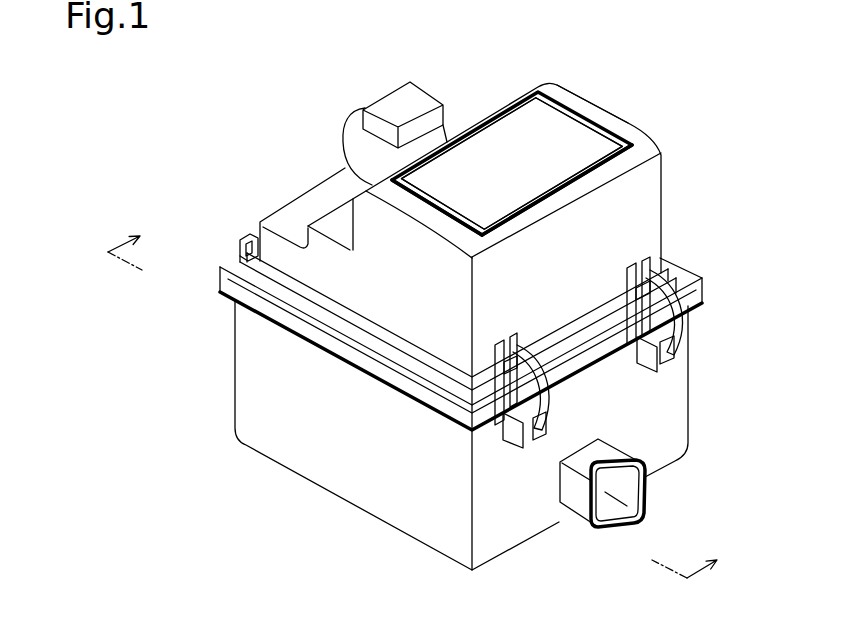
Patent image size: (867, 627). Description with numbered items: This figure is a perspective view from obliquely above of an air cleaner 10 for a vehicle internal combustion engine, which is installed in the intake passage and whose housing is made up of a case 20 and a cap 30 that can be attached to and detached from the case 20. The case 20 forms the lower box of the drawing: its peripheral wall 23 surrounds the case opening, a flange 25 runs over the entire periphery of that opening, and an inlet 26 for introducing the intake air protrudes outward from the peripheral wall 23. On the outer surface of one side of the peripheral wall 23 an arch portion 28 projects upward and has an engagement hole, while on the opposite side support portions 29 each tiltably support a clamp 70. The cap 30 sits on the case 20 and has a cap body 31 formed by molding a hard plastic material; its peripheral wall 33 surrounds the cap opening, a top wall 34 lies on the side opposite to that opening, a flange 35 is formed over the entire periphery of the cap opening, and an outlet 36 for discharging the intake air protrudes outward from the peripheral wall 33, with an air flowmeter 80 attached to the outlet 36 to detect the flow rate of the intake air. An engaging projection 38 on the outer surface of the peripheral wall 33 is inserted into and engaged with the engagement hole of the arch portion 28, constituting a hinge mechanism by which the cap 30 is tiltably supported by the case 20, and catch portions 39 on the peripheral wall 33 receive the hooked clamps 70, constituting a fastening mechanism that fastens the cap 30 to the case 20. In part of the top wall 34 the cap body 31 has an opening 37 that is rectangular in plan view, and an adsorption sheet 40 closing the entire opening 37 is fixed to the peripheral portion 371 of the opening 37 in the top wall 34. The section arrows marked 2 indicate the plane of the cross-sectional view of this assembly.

The air cleaner 10 is at (708, 90).
The cap 30 is at (690, 122).
The case 20 is at (251, 471).
The cap body 31 is at (638, 112).
The peripheral wall 33 is at (654, 188).
The top wall 34 is at (593, 104).
The flange 35 is at (345, 336).
The outlet 36 is at (344, 146).
The opening 37 is at (445, 205).
The peripheral portion 371 is at (558, 186).
The engaging projection 38 is at (244, 236).
The catch portion 39 is at (653, 262).
The adsorption sheet 40 is at (495, 144).
The air flowmeter 80 is at (397, 103).
The peripheral wall 23 is at (250, 383).
The flange 25 is at (373, 378).
The inlet 26 is at (624, 527).
The arch portion 28 is at (240, 252).
The support portion 29 is at (536, 447).
The clamp 70 is at (552, 402).
The section line 2 is at (424, 397).